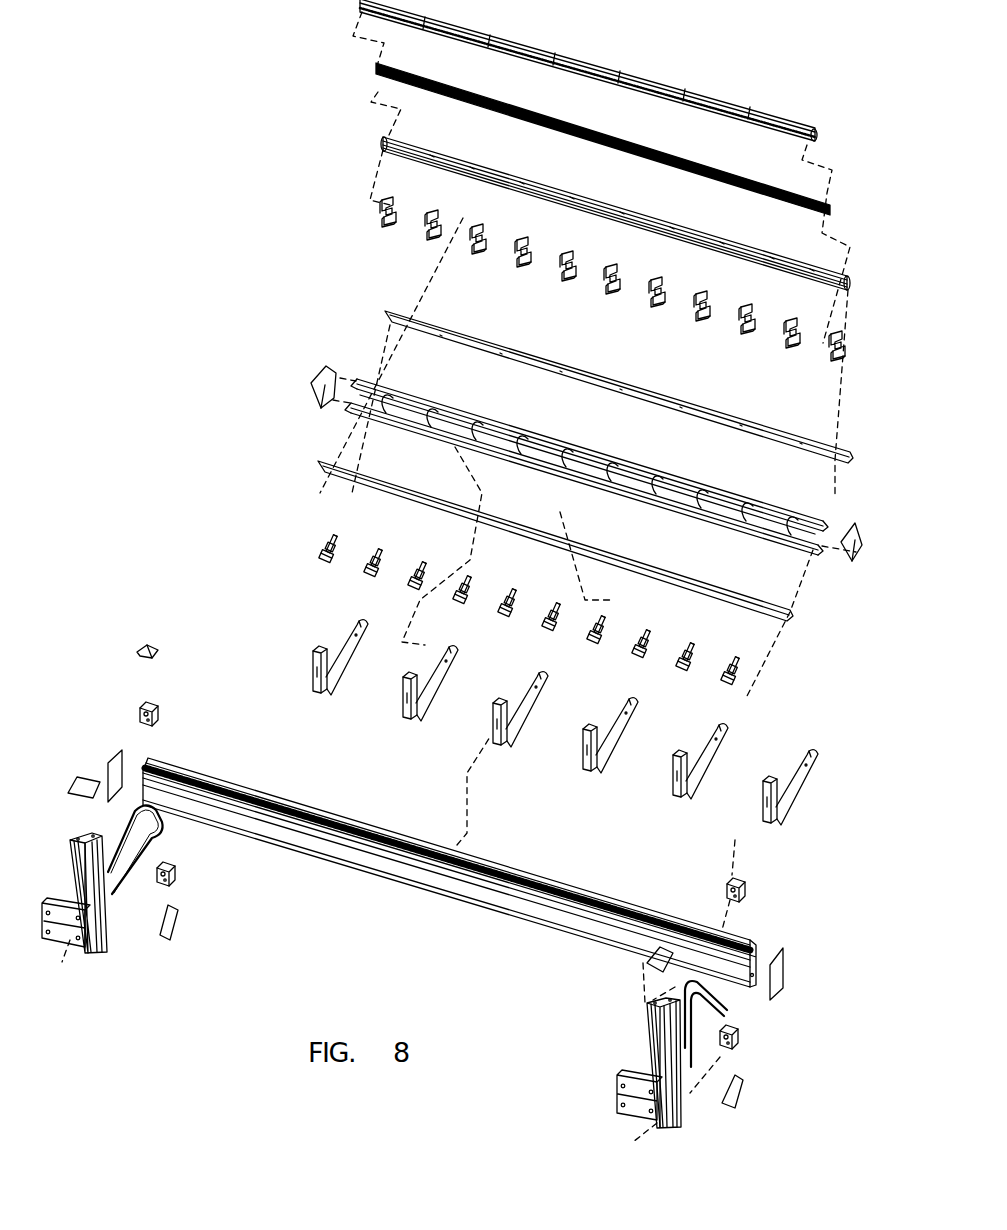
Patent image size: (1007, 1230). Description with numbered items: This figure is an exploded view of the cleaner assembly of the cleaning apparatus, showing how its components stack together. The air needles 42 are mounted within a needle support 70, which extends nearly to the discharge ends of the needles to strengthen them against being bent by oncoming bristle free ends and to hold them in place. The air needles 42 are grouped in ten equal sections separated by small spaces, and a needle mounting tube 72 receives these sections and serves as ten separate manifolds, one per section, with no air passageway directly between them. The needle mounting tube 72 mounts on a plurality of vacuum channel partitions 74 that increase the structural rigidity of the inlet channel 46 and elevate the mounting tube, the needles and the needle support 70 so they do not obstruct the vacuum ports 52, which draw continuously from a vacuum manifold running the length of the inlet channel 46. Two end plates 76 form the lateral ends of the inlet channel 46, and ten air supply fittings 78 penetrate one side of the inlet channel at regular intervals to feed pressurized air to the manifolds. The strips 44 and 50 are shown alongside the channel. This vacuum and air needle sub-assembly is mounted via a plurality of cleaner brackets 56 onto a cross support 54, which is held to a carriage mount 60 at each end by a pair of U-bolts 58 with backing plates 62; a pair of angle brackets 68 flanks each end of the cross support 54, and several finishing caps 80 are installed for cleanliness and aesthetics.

The air needles 42 is at (828, 210).
The cover strip 44 is at (838, 448).
The inlet channel 46 is at (586, 467).
The lower cover strip 50 is at (716, 588).
The vacuum ports 52 is at (518, 430).
The cross support 54 is at (682, 922).
The cleaner brackets 56 is at (512, 680).
The U-bolts 58 is at (150, 828).
The carriage mount 60 is at (102, 948).
The backing plates 62 is at (72, 945).
The angle brackets 68 is at (160, 708).
The needle support 70 is at (800, 130).
The needle mounting tube 72 is at (838, 282).
The vacuum channel partitions 74 is at (575, 268).
The end plates 76 is at (322, 376).
The air supply fittings 78 is at (555, 608).
The finishing caps 80 is at (160, 650).